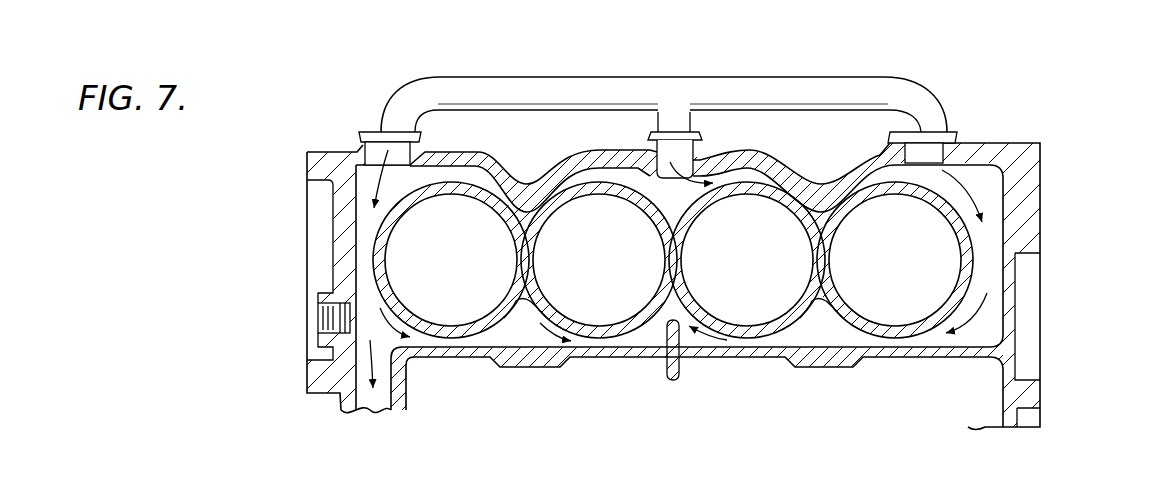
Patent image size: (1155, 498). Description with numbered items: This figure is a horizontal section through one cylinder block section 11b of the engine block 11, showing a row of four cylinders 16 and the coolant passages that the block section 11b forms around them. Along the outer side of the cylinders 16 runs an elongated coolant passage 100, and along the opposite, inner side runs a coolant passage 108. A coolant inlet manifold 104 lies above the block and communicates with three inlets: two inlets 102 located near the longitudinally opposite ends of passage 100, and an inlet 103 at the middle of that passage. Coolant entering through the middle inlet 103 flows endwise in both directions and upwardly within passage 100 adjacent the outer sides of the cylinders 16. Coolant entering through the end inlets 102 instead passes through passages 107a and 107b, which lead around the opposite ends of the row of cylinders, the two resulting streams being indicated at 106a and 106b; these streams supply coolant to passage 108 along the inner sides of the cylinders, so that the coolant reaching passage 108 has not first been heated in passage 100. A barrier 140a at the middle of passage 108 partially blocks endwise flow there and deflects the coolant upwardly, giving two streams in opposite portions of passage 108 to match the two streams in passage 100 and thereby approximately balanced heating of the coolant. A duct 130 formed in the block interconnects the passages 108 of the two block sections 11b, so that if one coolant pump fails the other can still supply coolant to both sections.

The block 11 is at (1062, 343).
The block V-section 11b is at (1015, 142).
The cylinder 16 is at (673, 260).
The coolant passage 100 is at (779, 168).
The coolant inlet 102 is at (396, 131).
The coolant inlet 103 is at (655, 145).
The coolant inlet manifold 104 is at (718, 80).
The coolant stream 106a is at (353, 185).
The coolant stream 106b is at (1003, 179).
The coolant passage 107a is at (353, 238).
The coolant passage 107b is at (985, 243).
The coolant passage 108 is at (805, 330).
The duct 130 is at (350, 398).
The barrier 140a is at (665, 335).